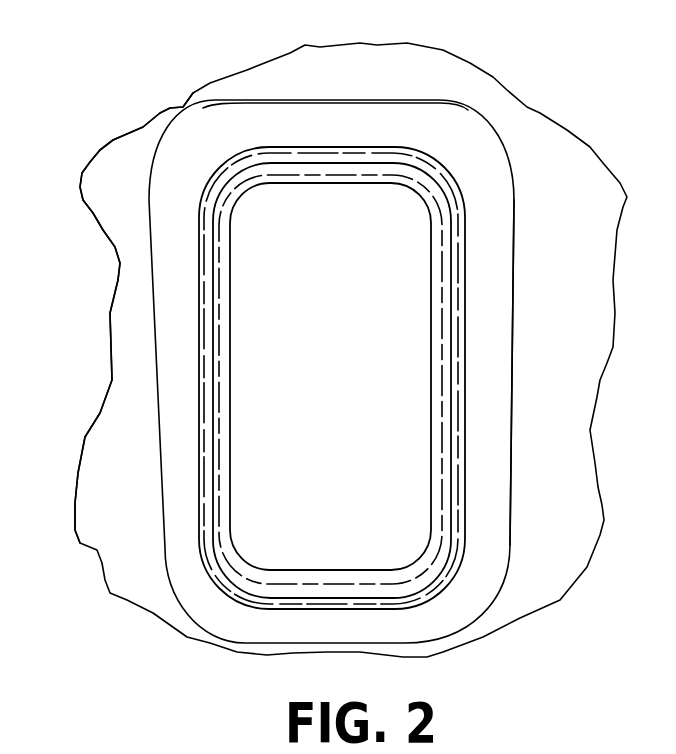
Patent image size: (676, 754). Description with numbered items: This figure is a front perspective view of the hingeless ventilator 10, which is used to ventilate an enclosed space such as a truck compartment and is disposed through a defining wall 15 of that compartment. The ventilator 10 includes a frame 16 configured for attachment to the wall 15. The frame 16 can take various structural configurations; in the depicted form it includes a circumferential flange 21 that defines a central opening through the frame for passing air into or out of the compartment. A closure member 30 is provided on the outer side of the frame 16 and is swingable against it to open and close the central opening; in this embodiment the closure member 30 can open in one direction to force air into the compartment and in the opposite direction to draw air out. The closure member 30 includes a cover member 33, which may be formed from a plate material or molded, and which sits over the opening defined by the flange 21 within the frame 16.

The hingeless ventilator 10 is at (537, 162).
The defining wall 15 is at (110, 187).
The frame 16 is at (163, 482).
The circumferential flange 21 is at (497, 270).
The closure member 30 is at (318, 218).
The cover member 33 is at (413, 425).